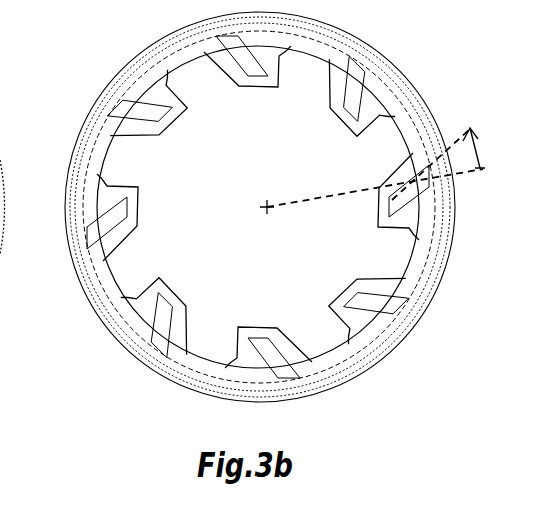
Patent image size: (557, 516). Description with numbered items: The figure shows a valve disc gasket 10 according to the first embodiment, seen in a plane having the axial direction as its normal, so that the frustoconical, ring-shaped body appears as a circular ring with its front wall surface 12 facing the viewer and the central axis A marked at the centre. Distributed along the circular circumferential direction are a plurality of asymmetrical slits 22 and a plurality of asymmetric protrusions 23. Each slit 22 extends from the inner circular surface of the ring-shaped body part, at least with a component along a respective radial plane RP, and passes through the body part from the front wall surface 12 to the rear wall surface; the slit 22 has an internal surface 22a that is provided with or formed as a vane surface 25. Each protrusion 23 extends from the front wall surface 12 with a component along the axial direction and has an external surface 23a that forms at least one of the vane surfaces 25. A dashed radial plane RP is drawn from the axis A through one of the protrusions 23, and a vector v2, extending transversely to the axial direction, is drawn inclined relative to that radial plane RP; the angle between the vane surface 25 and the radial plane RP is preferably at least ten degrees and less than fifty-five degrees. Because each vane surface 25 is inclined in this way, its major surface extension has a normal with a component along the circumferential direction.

The valve disc gasket 10 is at (130, 389).
The front wall surface 12 is at (93, 183).
The asymmetrical slit 22 is at (325, 339).
The internal surface of slit 22a is at (220, 133).
The asymmetric protrusion 23 is at (280, 367).
The external surface of protrusion 23a is at (409, 167).
The vane surface 25 is at (211, 69).
The central axis A is at (232, 180).
The radial plane RP is at (375, 188).
The vector v2 is at (392, 200).